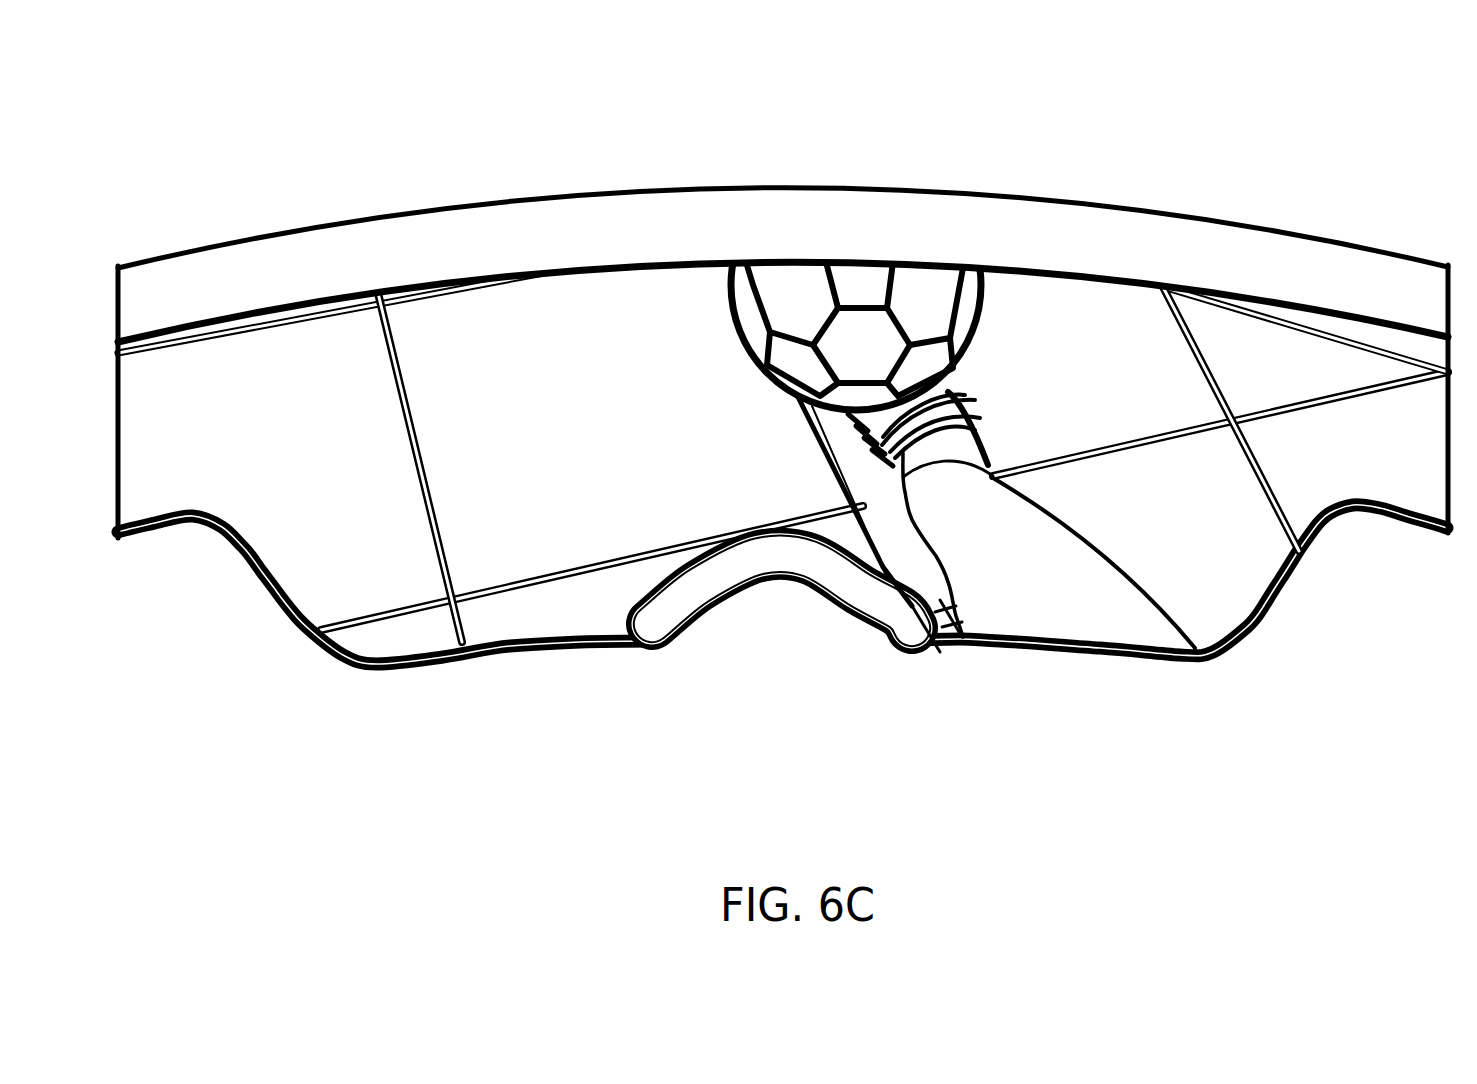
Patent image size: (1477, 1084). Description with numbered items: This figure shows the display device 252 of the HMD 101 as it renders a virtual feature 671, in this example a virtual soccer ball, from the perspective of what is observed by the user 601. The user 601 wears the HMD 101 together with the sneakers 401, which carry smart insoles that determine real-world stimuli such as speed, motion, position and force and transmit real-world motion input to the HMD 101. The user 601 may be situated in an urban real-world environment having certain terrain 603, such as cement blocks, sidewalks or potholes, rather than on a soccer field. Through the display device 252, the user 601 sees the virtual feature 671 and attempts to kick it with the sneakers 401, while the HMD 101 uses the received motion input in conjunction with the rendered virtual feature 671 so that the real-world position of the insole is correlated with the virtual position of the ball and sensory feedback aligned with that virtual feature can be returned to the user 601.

The HMD 101 is at (1302, 142).
The display device 252 is at (1288, 636).
The sneakers 401 is at (785, 419).
The user 601 is at (1133, 562).
The terrain 603 is at (495, 622).
The virtual feature 671 is at (718, 306).